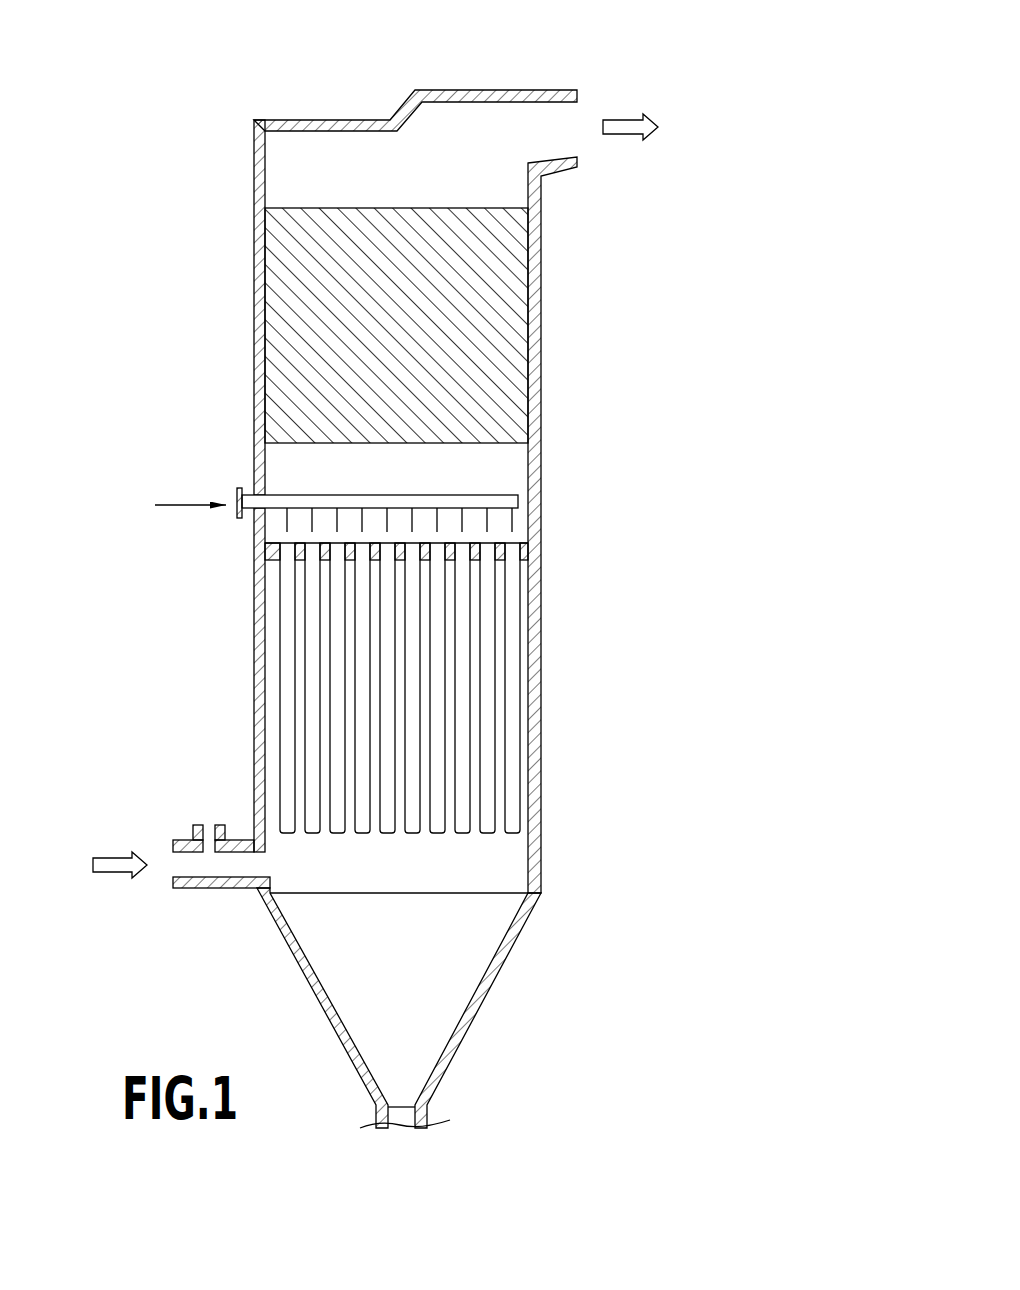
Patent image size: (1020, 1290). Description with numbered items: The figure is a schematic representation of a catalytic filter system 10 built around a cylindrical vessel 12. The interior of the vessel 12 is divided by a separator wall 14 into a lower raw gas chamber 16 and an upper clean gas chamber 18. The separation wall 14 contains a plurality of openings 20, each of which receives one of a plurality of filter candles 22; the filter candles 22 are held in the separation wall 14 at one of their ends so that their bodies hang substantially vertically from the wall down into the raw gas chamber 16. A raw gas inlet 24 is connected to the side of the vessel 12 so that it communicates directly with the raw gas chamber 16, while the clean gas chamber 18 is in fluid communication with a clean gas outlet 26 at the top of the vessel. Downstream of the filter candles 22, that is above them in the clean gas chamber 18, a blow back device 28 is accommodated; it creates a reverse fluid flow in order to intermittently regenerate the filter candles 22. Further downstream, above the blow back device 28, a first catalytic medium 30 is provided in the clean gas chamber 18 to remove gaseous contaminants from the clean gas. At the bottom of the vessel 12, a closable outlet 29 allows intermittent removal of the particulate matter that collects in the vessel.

The catalytic filter system 10 is at (700, 526).
The cylindrical vessel 12 is at (240, 655).
The separator wall 14 is at (540, 543).
The raw gas chamber 16 is at (300, 872).
The clean gas chamber 18 is at (497, 465).
The openings 20 is at (305, 541).
The filter candles 22 is at (511, 747).
The raw gas inlet 24 is at (193, 862).
The clean gas outlet 26 is at (556, 115).
The blow back device 28 is at (240, 466).
The closable outlet 29 is at (428, 1118).
The first catalytic medium 30 is at (490, 281).